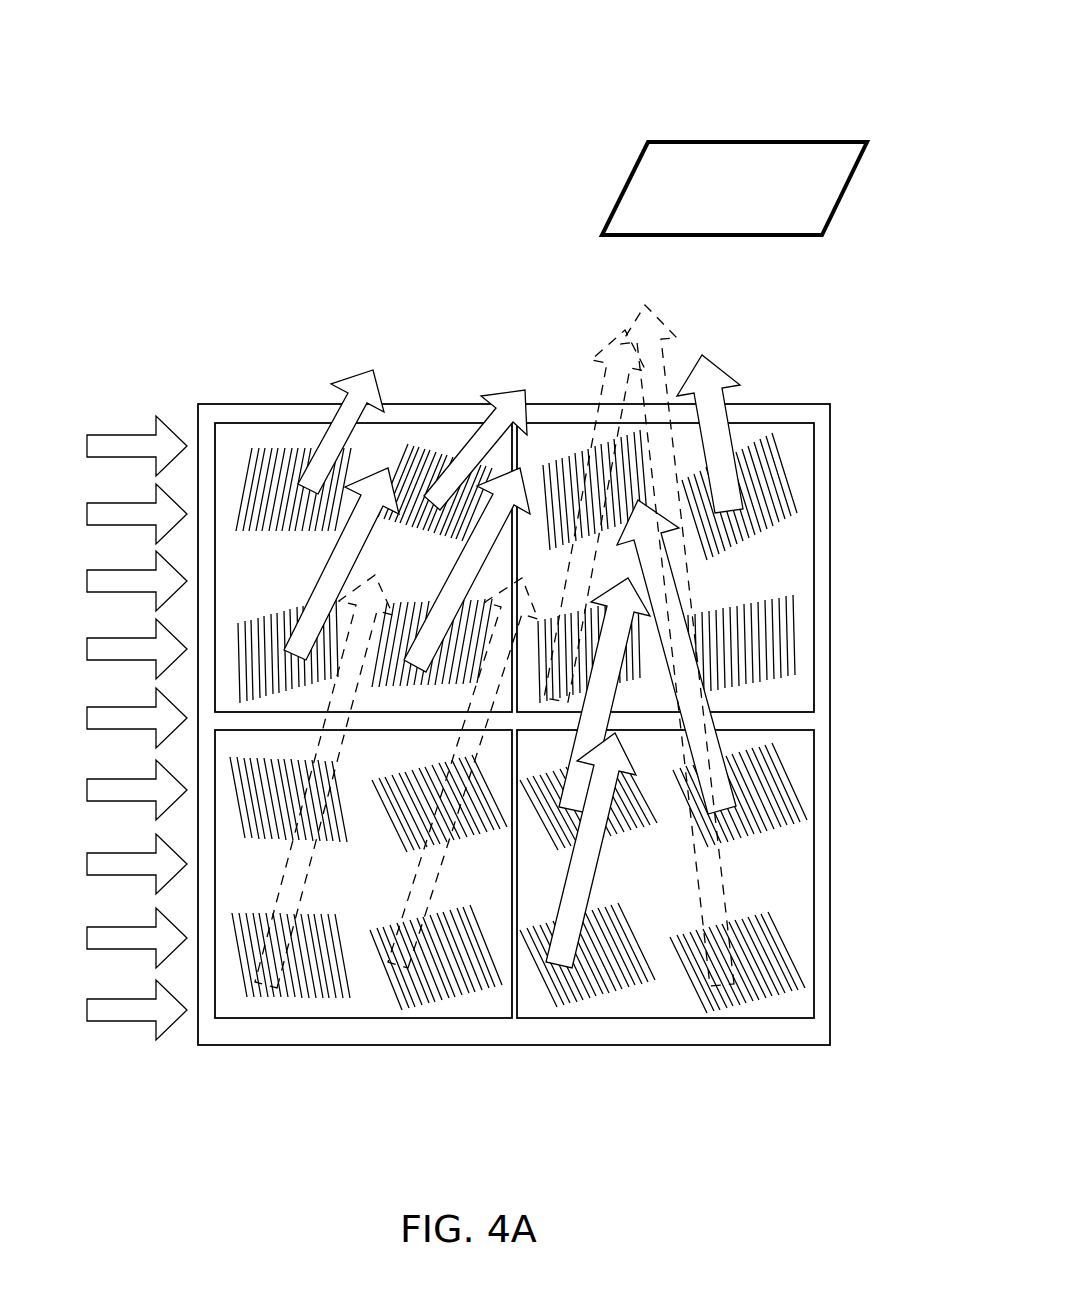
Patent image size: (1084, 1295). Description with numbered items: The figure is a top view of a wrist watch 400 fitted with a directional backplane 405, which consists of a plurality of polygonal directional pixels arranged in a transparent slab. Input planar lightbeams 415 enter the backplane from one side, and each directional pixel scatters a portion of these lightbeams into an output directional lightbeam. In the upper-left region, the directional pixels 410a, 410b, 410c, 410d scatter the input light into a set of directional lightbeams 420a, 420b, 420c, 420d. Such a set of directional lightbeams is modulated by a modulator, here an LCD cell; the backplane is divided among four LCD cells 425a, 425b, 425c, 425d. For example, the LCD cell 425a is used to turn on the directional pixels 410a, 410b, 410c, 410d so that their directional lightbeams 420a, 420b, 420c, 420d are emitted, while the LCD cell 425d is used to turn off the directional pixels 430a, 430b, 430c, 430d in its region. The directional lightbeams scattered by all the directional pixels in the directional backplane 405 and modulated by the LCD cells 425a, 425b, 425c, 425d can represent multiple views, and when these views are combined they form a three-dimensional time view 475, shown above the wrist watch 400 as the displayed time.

The wrist watch 400 is at (487, 240).
The directional backplane 405 is at (767, 417).
The directional pixel 410a is at (262, 473).
The directional pixel 410b is at (265, 630).
The directional pixel 410c is at (435, 470).
The directional pixel 410d is at (420, 667).
The input planar lightbeams 415 is at (95, 433).
The directional lightbeam 420a is at (372, 390).
The directional lightbeam 420b is at (530, 370).
The directional lightbeam 420c is at (360, 487).
The directional lightbeam 420d is at (448, 587).
The LCD cell 425a is at (298, 437).
The LCD cell 425b is at (787, 563).
The LCD cell 425c is at (795, 767).
The LCD cell 425d is at (228, 802).
The directional pixel 430a is at (318, 835).
The directional pixel 430b is at (450, 843).
The directional pixel 430c is at (448, 910).
The directional pixel 430d is at (317, 943).
The 3D time view 475 is at (782, 90).